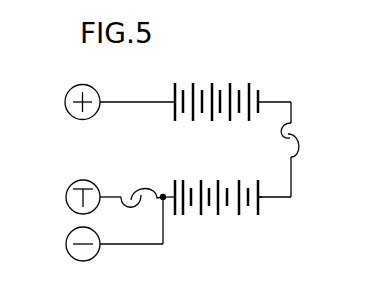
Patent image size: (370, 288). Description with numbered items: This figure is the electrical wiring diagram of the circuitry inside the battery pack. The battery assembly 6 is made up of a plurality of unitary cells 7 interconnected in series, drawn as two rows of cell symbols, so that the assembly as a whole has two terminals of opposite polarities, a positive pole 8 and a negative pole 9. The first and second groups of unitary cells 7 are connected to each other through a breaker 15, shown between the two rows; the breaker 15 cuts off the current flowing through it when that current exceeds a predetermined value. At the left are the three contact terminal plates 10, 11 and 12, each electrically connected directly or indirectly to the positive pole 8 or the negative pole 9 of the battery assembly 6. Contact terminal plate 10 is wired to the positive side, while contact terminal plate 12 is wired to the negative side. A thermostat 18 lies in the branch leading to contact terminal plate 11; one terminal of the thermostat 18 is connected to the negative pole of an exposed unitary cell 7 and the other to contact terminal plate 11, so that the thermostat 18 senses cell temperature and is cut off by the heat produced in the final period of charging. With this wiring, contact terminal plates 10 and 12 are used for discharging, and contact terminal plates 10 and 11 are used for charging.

The battery assembly 6 is at (255, 218).
The unitary cells 7 is at (250, 82).
The positive pole 8 is at (175, 79).
The negative pole 9 is at (174, 182).
The contact terminal plate 10 is at (70, 88).
The contact terminal plate 11 is at (69, 184).
The contact terminal plate 12 is at (68, 232).
The breaker 15 is at (297, 133).
The thermostat 18 is at (137, 186).